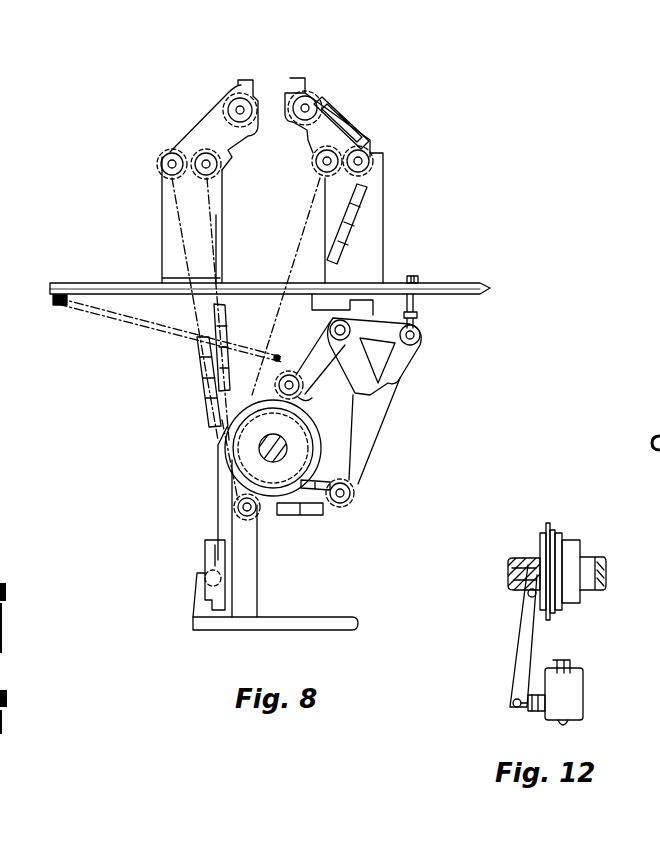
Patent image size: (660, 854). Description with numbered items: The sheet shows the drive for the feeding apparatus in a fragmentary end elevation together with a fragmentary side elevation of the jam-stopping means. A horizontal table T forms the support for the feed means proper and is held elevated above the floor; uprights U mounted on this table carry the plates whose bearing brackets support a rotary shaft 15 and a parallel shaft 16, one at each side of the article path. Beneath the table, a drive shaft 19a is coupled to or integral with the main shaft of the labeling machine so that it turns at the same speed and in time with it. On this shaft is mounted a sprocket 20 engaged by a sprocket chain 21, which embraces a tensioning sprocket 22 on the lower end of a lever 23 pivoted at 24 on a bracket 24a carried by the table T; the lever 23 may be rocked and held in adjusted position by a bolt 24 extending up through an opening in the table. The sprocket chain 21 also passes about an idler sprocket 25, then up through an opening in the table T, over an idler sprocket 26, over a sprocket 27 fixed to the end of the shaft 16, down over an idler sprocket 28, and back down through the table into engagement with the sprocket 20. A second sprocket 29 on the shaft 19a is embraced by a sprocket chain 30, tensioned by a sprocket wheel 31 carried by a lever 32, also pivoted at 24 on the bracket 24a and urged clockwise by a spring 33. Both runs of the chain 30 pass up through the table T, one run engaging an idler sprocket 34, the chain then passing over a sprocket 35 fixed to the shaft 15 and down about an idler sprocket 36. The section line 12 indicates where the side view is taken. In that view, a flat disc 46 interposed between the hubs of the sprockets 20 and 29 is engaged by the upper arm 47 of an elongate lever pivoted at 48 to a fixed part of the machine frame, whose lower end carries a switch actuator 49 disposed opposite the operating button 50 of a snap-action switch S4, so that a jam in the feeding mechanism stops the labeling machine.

In FIG. 8, the section line 12- 12 is at (196, 402).
In FIG. 8, the rotary shaft 15 is at (312, 100).
In FIG. 8, the shaft 16 is at (233, 106).
In FIG. 8, the drive shaft 19a is at (290, 444).
In FIG. 12, the drive shaft 19a is at (520, 560).
In FIG. 8, the sprocket 20 is at (297, 458).
In FIG. 12, the sprocket 20 is at (541, 540).
In FIG. 8, the sprocket chain 21 is at (228, 328).
In FIG. 8, the tensioning sprocket 22 is at (345, 504).
In FIG. 8, the lever 23 is at (375, 407).
In FIG. 8, the pivot 24 is at (417, 314).
In FIG. 8, the bracket 24a is at (402, 280).
In FIG. 8, the idler sprocket 25 is at (255, 515).
In FIG. 8, the idler sprocket 26 is at (168, 174).
In FIG. 8, the sprocket 27 is at (247, 100).
In FIG. 8, the idler sprocket 28 is at (222, 166).
In FIG. 12, the second sprocket 29 is at (562, 536).
In FIG. 8, the sprocket chain 30 is at (343, 242).
In FIG. 8, the sprocket wheel 31 is at (306, 399).
In FIG. 8, the lever 32 is at (303, 385).
In FIG. 8, the spring 33 is at (157, 328).
In FIG. 8, the idler sprocket 34 is at (370, 153).
In FIG. 8, the sprocket 35 is at (322, 100).
In FIG. 8, the idler sprocket 36 is at (316, 173).
In FIG. 12, the flat disc 46 is at (549, 525).
In FIG. 8, the upper arm 47 is at (220, 493).
In FIG. 12, the upper arm 47 is at (512, 575).
In FIG. 12, the pivot 48 is at (528, 597).
In FIG. 12, the switch actuator 49 is at (522, 710).
In FIG. 12, the operating button 50 is at (565, 666).
In FIG. 12, the snap-action switch S4 is at (574, 696).
In FIG. 8, the horizontal table T is at (457, 283).
In FIG. 8, the uprights U is at (222, 212).